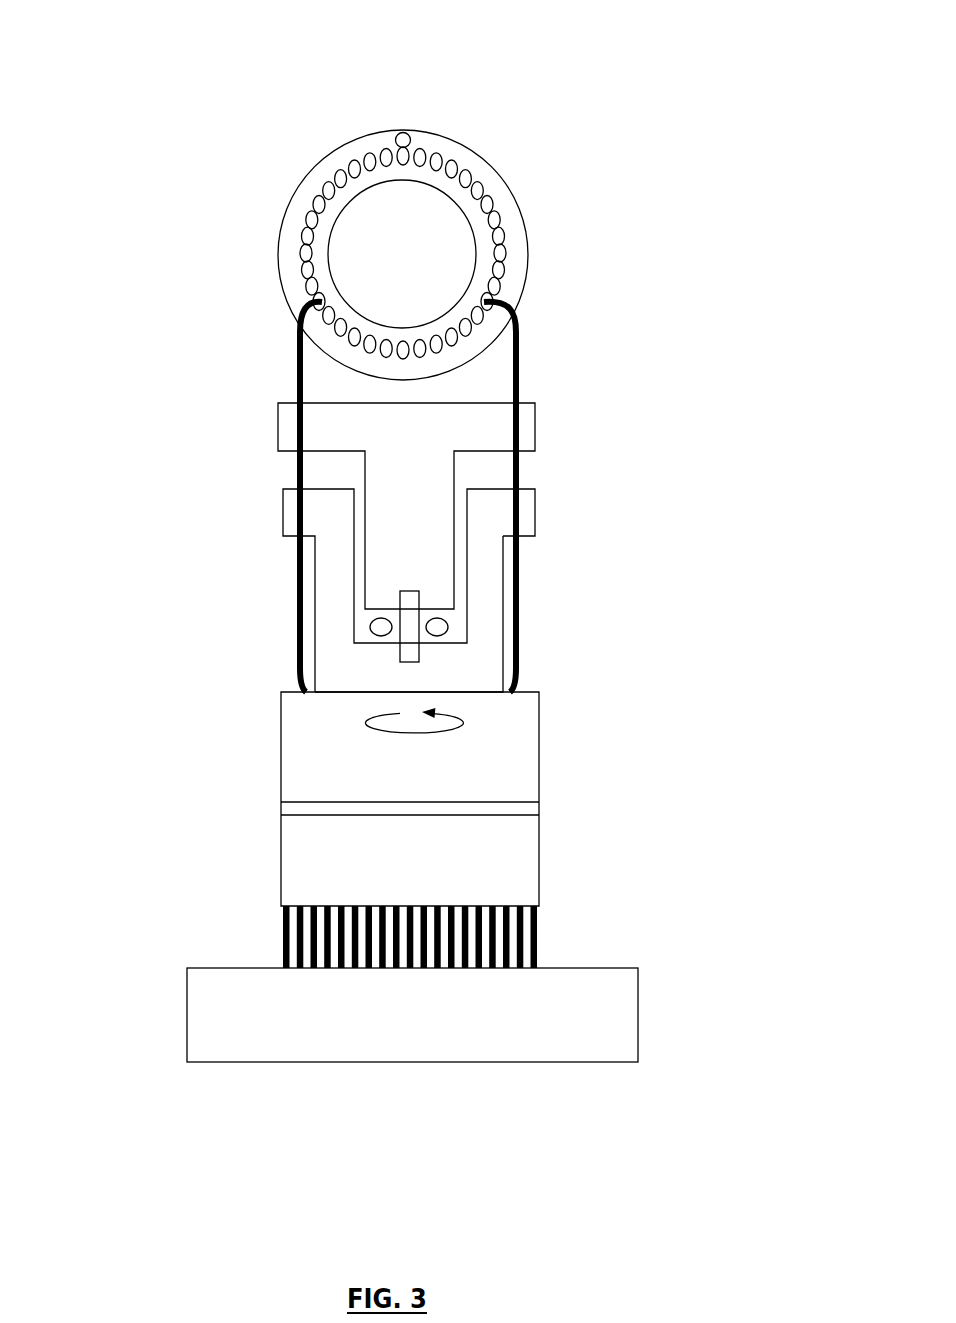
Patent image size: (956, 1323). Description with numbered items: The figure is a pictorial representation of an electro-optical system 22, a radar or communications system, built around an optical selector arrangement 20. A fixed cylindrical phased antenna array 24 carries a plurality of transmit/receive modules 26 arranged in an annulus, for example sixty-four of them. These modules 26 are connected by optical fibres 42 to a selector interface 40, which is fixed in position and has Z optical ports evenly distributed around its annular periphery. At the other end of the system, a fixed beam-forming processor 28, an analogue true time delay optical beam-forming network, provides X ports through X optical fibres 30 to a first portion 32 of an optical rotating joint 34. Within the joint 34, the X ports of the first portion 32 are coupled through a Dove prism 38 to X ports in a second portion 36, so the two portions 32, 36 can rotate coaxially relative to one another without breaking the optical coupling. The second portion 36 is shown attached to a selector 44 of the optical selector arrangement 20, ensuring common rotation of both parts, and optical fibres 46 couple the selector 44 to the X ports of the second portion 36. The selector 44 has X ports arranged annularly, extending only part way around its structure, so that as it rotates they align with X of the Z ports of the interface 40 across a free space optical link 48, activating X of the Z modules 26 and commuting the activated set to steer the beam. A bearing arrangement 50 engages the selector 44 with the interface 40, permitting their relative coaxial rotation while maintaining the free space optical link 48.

The optical selector arrangement 20 is at (214, 528).
The electro-optical system 22 is at (558, 79).
The fixed cylindrical phased antenna array 24 is at (529, 240).
The transmit/receive modules 26 is at (307, 208).
The beam-forming processor 28 is at (272, 1068).
The optical fibres 30 is at (270, 938).
The first portion 32 is at (547, 865).
The optical rotating joint 34 is at (580, 790).
The second portion 36 is at (280, 748).
The Dove prism 38 is at (277, 808).
The selector interface 40 is at (265, 408).
The optical fibres 42 is at (526, 359).
The selector 44 is at (278, 518).
The optical fibres 46 is at (524, 554).
The free space optical link 48 is at (533, 466).
The bearing arrangement 50 is at (458, 635).